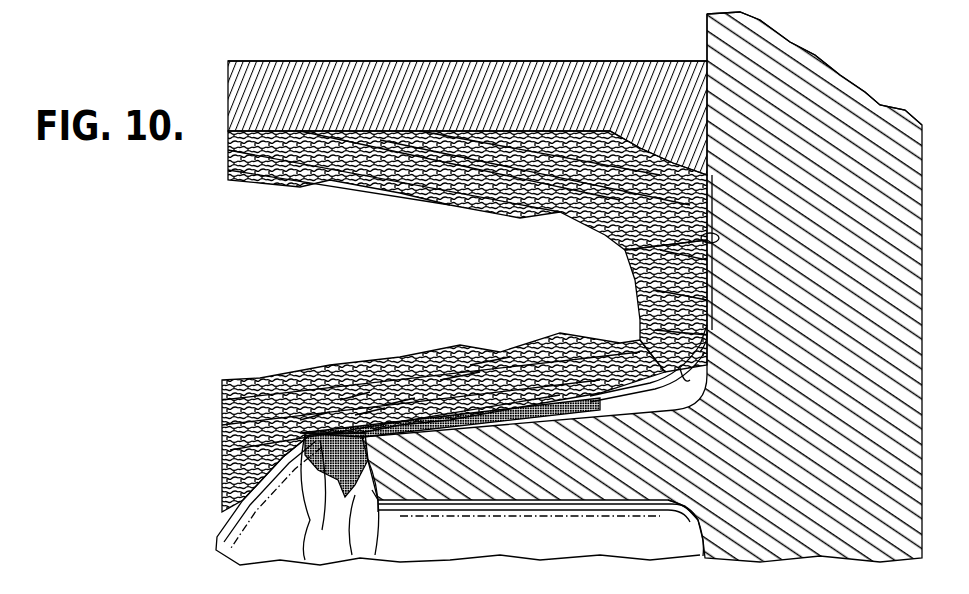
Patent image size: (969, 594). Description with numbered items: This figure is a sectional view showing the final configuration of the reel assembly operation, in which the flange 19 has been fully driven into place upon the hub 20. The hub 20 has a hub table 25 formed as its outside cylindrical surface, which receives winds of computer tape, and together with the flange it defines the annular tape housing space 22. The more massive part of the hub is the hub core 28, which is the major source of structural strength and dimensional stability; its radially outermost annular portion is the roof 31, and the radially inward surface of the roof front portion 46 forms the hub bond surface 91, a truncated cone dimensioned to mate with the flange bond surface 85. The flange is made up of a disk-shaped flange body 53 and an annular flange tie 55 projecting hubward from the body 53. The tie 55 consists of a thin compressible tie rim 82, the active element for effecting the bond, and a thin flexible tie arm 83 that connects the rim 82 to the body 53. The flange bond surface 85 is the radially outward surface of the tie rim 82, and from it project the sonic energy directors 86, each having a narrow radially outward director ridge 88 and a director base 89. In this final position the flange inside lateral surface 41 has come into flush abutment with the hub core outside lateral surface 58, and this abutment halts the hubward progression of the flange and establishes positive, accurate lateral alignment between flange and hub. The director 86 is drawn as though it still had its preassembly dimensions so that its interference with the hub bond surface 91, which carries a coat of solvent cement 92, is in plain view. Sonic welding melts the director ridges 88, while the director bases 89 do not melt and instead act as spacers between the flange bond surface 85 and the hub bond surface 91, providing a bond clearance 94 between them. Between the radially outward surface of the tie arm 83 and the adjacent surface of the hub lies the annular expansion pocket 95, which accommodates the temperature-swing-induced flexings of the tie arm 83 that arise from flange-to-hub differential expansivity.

The front flange 19 is at (852, 96).
The hub 20 is at (213, 447).
The tape housing space 22 is at (467, 104).
The hub table 25 is at (528, 61).
The hub core 28 is at (222, 400).
The roof 31 is at (312, 183).
The flange inside lateral surface 41 is at (707, 23).
The roof front portion 46 is at (520, 222).
The flange body 53 is at (785, 72).
The flange tie 55 is at (532, 484).
The hub core outside lateral surface 58 is at (633, 248).
The tie rim 82 is at (402, 480).
The tie arm 83 is at (627, 487).
The flange bond surface 85 is at (323, 412).
The sonic energy director 86 is at (460, 347).
The director ridge 88 is at (358, 350).
The director base 89 is at (483, 343).
The hub bond surface 91 is at (400, 403).
The solvent cement 92 is at (332, 488).
The bond clearance 94 is at (373, 417).
The expansion pocket 95 is at (643, 307).